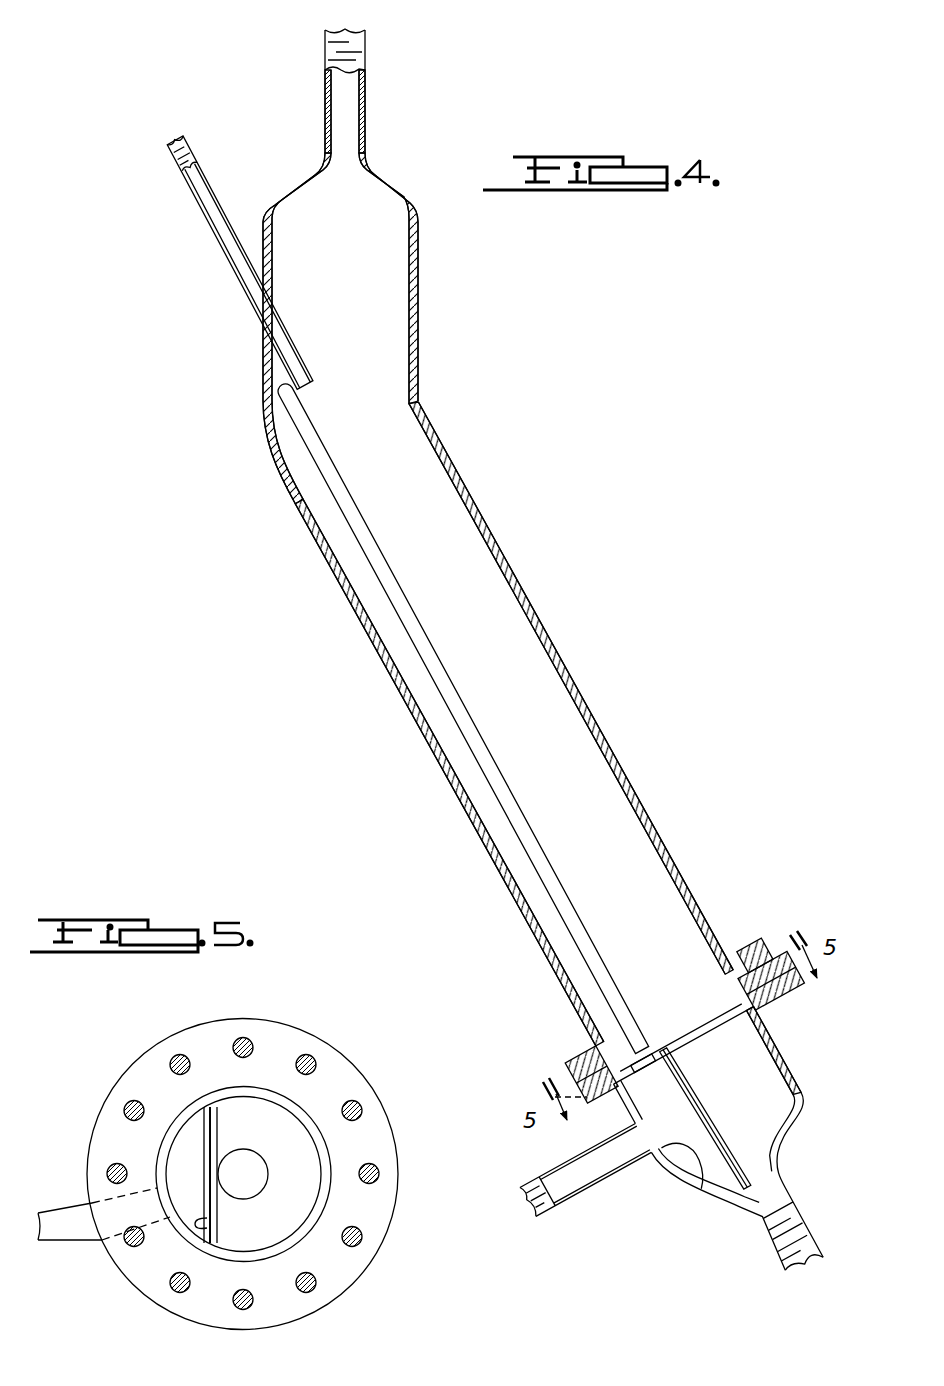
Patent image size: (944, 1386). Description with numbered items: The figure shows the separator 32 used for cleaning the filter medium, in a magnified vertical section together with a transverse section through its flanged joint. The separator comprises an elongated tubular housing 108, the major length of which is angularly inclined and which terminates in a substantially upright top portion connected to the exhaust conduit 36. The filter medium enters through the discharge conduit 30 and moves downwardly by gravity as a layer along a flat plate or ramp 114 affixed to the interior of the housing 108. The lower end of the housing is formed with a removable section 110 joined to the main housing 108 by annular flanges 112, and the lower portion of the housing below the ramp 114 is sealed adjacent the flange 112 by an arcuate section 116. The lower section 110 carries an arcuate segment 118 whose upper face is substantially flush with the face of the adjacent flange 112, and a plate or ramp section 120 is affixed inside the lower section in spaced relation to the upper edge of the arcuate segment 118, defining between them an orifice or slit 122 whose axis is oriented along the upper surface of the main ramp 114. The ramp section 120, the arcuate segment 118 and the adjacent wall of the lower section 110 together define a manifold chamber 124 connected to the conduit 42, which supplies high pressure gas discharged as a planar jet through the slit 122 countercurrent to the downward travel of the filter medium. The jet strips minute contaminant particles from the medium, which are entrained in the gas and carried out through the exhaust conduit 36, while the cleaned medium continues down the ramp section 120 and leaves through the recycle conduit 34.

In FIG. 4, the discharge conduit 30 is at (222, 255).
In FIG. 4, the separator 32 is at (445, 794).
In FIG. 4, the recycle conduit 34 is at (817, 1240).
In FIG. 5, the recycle conduit 34 is at (243, 1174).
In FIG. 4, the exhaust conduit 36 is at (340, 63).
In FIG. 4, the conduit 42 is at (577, 1197).
In FIG. 5, the conduit 42 is at (67, 1230).
In FIG. 4, the tubular housing 108 is at (622, 748).
In FIG. 4, the removable section 110 is at (800, 1104).
In FIG. 5, the removable section 110 is at (243, 1174).
In FIG. 4, the annular flange 112 is at (777, 968).
In FIG. 5, the annular flange 112 is at (337, 1050).
In FIG. 4, the ramp 114 is at (427, 650).
In FIG. 4, the arcuate section 116 is at (623, 1047).
In FIG. 4, the arcuate segment 118 is at (643, 1077).
In FIG. 5, the arcuate segment 118 is at (173, 1153).
In FIG. 4, the ramp section 120 is at (707, 1120).
In FIG. 5, the ramp section 120 is at (212, 1130).
In FIG. 4, the slit 122 is at (640, 1077).
In FIG. 5, the slit 122 is at (207, 1222).
In FIG. 4, the manifold chamber 124 is at (693, 1150).